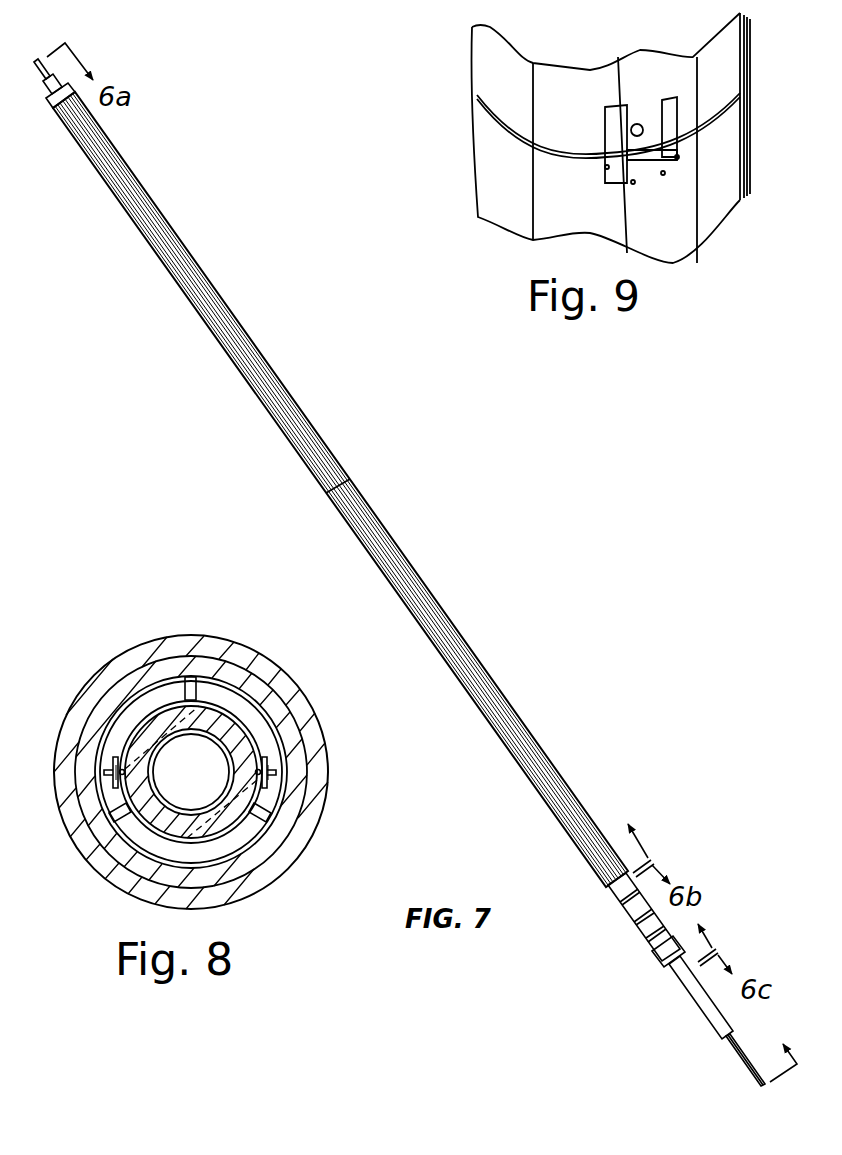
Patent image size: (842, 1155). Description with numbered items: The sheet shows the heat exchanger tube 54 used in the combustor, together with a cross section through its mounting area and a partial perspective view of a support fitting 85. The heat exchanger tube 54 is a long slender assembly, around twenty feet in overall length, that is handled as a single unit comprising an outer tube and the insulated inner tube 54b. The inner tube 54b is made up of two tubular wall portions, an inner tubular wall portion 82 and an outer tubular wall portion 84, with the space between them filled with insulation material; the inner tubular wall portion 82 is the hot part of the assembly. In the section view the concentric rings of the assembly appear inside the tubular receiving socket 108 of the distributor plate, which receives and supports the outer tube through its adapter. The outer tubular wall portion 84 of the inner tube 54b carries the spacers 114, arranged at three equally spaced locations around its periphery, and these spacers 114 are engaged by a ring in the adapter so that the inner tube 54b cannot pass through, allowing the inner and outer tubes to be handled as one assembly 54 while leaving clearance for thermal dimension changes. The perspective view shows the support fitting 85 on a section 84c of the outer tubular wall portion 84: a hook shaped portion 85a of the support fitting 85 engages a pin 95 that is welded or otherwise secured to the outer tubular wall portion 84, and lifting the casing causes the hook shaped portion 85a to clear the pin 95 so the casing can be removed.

In FIG. 7, the heat exchanger tube 54 is at (420, 524).
In FIG. 8, the inner tube 54b is at (168, 720).
In FIG. 8, the tubular receiving socket 108 is at (114, 672).
In FIG. 8, the inner tubular wall portion 82 is at (228, 737).
In FIG. 8, the outer tubular wall portion 84 is at (313, 690).
In FIG. 9, the outer tubular wall portion 84 is at (507, 82).
In FIG. 9, the shell section 84c is at (507, 170).
In FIG. 8, the support fitting 85 is at (263, 757).
In FIG. 9, the support fitting 85 is at (617, 175).
In FIG. 9, the hook shaped portion 85a is at (640, 120).
In FIG. 8, the pin 95 is at (275, 773).
In FIG. 9, the pin 95 is at (640, 125).
In FIG. 8, the spacers 114 is at (277, 813).